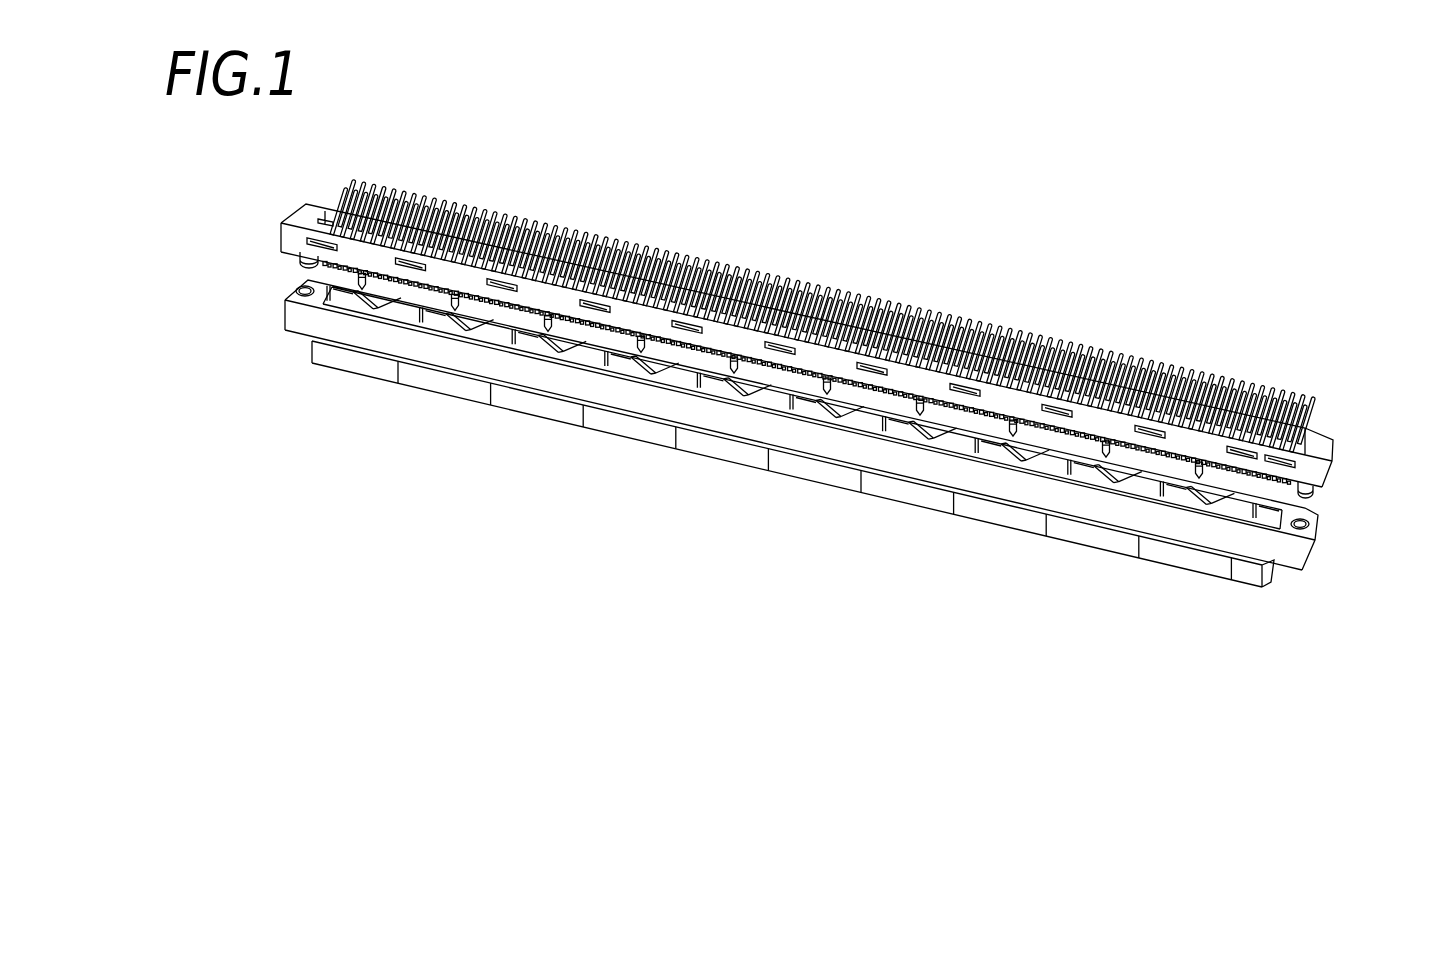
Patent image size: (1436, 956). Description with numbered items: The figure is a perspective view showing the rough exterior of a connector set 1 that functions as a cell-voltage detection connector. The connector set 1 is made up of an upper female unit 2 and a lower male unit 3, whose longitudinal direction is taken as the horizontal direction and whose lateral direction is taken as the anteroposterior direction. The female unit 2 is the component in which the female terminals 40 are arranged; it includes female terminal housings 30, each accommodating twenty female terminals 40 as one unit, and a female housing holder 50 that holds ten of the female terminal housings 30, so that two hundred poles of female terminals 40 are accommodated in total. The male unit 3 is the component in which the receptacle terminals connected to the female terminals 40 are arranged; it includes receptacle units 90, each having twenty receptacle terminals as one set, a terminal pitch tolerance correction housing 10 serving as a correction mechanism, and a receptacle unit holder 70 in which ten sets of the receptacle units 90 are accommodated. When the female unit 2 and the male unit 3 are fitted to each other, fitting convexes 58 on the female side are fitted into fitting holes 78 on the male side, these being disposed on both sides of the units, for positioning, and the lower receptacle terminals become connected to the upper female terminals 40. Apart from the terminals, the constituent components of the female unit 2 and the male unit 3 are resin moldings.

The connector set 1 is at (1167, 272).
The female unit 2 is at (243, 208).
The male unit 3 is at (261, 389).
The terminal pitch tolerance correction housing 10 is at (362, 303).
The female terminal housing 30 is at (320, 271).
The female terminal 40 is at (412, 209).
The female housing holder 50 is at (305, 218).
The fitting convex 58 is at (292, 258).
The receptacle unit holder 70 is at (452, 352).
The fitting hole 78 is at (295, 300).
The receptacle unit 90 is at (365, 366).